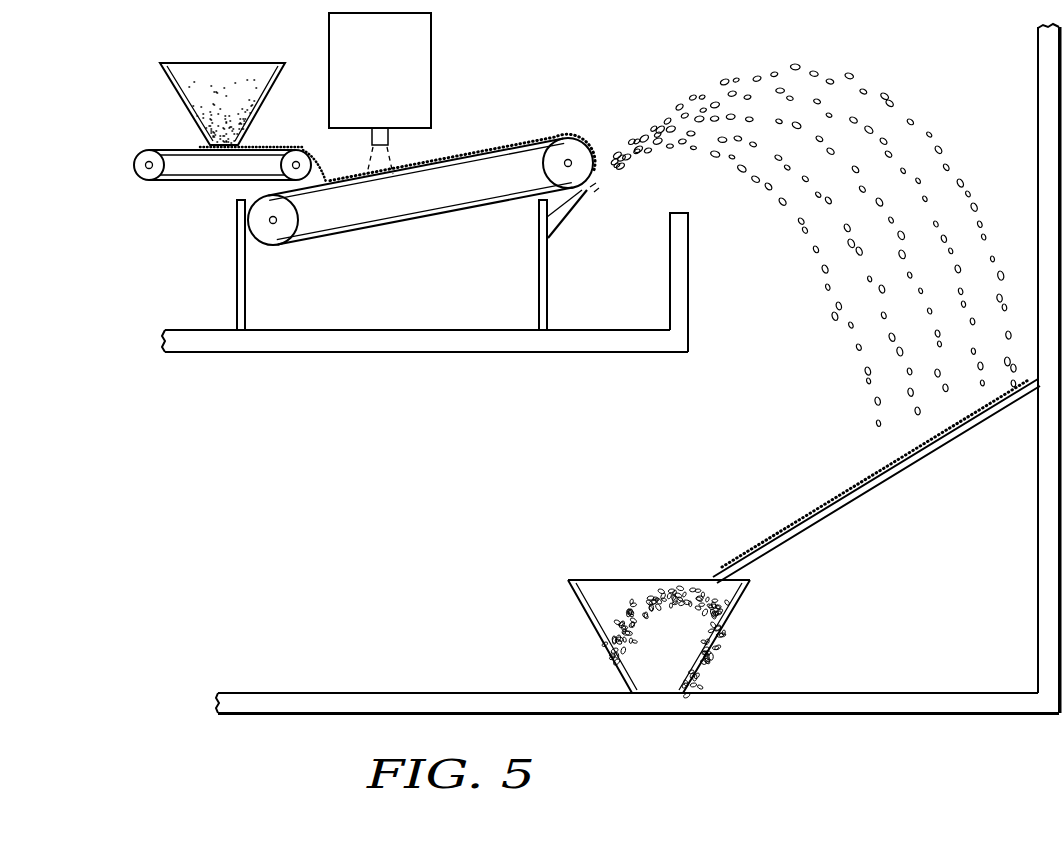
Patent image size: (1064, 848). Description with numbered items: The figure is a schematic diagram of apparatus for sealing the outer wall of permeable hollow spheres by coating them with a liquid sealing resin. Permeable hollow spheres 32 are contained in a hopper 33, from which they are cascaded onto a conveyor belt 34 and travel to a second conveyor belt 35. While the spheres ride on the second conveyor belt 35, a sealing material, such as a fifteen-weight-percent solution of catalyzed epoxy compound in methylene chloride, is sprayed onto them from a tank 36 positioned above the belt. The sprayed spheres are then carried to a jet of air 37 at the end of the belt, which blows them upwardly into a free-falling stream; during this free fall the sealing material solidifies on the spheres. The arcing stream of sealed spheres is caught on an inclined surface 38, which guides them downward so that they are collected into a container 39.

The permeable hollow spheres 32 is at (220, 90).
The hopper 33 is at (169, 80).
The conveyor belt 34 is at (197, 182).
The second conveyor belt 35 is at (436, 215).
The tank 36 is at (362, 71).
The jet of air 37 is at (593, 187).
The inclined surface 38 is at (842, 506).
The container 39 is at (715, 639).